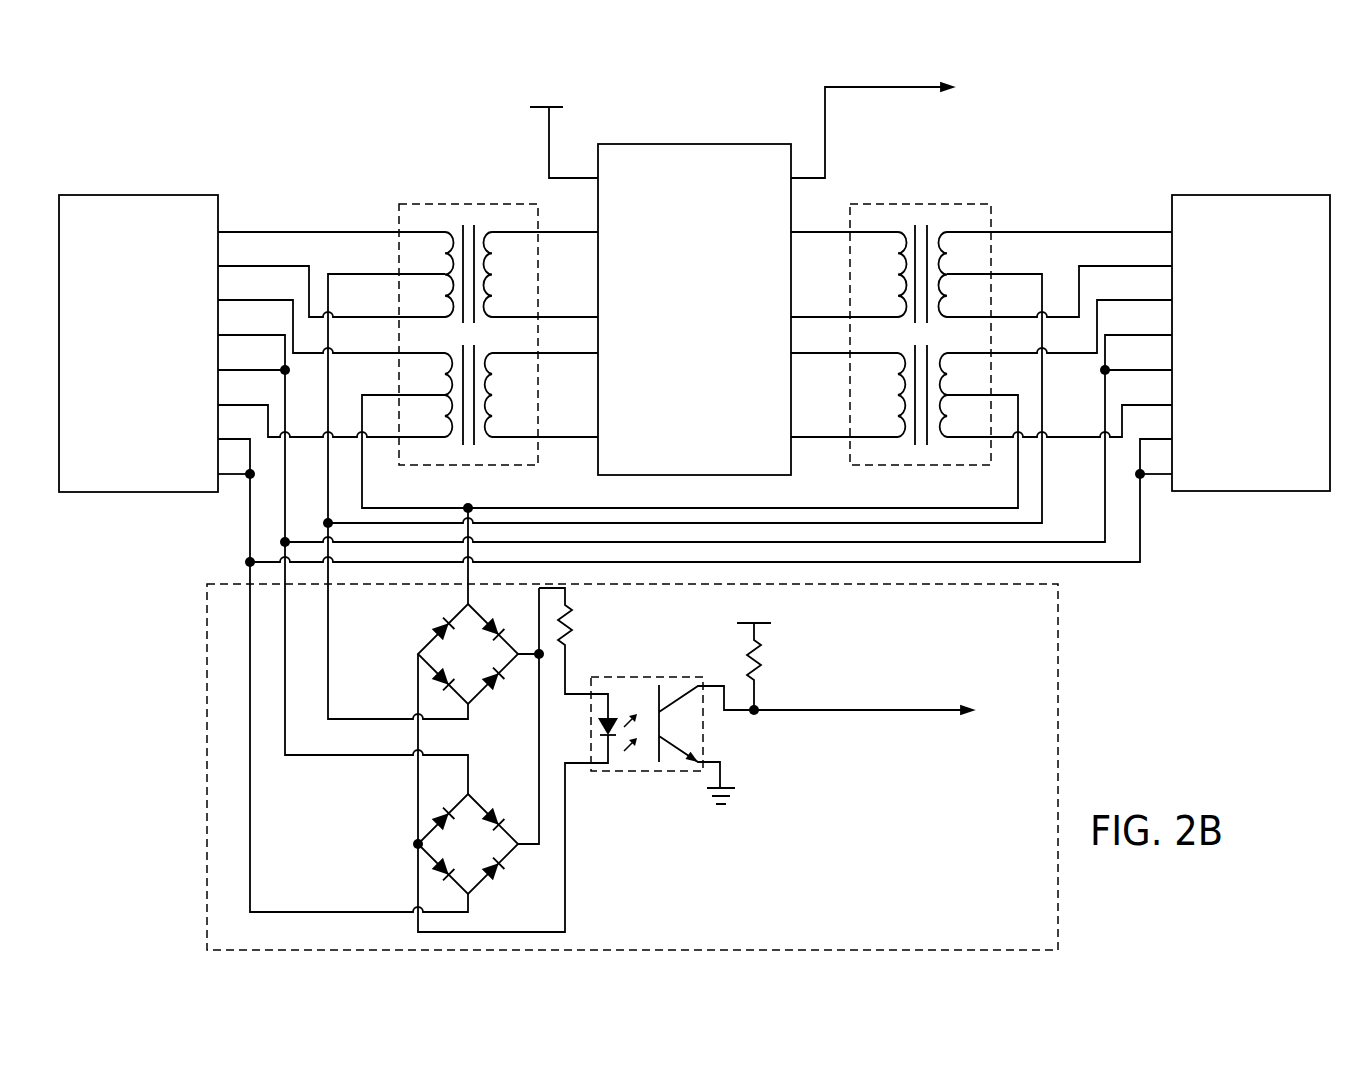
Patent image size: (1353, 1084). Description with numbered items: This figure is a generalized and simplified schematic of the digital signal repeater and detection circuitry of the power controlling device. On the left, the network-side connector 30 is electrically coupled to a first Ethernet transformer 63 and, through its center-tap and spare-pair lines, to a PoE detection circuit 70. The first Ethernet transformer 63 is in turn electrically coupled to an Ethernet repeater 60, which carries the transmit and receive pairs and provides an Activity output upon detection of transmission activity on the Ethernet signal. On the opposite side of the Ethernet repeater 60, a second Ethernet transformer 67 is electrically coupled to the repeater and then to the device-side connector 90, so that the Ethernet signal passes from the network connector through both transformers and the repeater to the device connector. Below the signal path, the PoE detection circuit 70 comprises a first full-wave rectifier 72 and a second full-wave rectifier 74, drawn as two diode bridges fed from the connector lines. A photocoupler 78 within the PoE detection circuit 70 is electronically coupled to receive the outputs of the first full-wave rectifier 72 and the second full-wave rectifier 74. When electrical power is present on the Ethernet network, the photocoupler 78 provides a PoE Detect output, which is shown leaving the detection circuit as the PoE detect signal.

The network-side RJ-45 connector 30 is at (132, 492).
The Ethernet repeater 60 is at (598, 472).
The first Ethernet transformer 63 is at (398, 219).
The second Ethernet transformer 67 is at (993, 212).
The PoE detection circuit 70 is at (207, 768).
The first full-wave rectifier 72 is at (417, 654).
The second full-wave rectifier 74 is at (418, 844).
The photocoupler 78 is at (625, 772).
The device-side RJ-45 connector 90 is at (1280, 492).